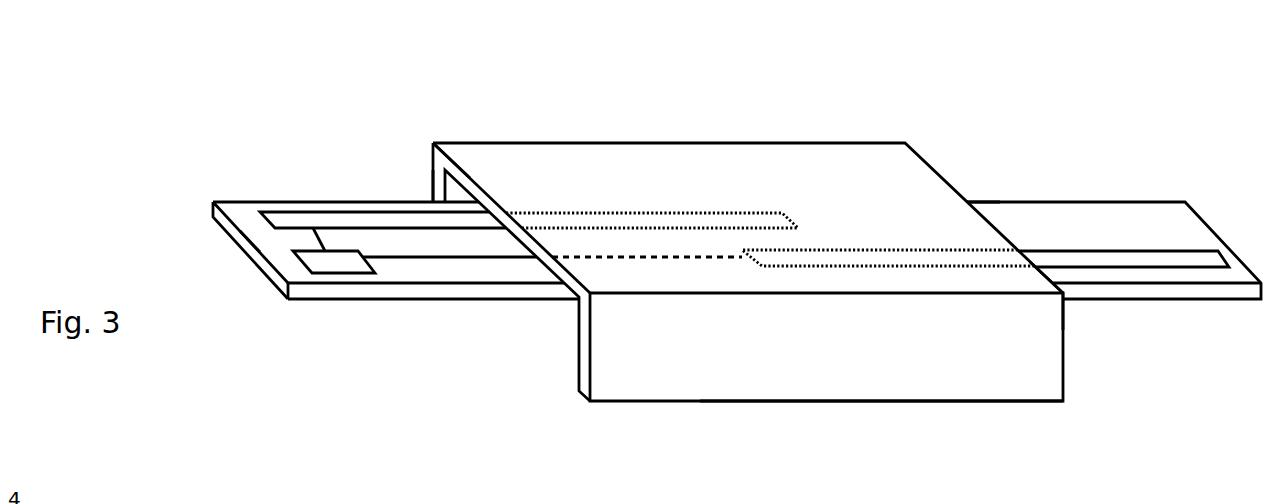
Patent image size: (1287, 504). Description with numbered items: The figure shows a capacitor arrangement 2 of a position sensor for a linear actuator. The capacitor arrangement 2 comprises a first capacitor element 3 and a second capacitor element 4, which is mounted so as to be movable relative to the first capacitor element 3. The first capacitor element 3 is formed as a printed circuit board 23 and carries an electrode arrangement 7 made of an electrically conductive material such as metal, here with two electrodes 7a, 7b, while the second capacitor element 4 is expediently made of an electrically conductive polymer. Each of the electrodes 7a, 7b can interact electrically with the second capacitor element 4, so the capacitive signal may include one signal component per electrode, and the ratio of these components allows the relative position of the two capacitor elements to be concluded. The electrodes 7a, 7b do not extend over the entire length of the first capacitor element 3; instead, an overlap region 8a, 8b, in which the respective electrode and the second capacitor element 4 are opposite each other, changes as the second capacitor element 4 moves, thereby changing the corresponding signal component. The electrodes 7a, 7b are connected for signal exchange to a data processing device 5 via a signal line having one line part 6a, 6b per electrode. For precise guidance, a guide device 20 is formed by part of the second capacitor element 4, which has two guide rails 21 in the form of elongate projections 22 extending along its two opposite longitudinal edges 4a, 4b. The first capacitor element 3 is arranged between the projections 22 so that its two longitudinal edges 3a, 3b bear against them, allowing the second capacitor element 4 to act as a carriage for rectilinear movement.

The capacitor arrangement 2 is at (278, 118).
The first capacitor element 3 is at (1097, 217).
The longitudinal edge of the first capacitor element 3a is at (213, 205).
The longitudinal edge of the first capacitor element 3b is at (368, 293).
The second capacitor element 4 is at (676, 160).
The longitudinal edge of the second capacitor element 4a is at (431, 151).
The longitudinal edge of the second capacitor element 4b is at (1050, 304).
The data processing device 5 is at (330, 252).
The line part 6a is at (312, 237).
The line part 6b is at (455, 262).
The electrode arrangement 7 is at (257, 236).
The electrode 7a is at (352, 222).
The electrode 7b is at (1204, 261).
The overlap region 8a is at (765, 218).
The overlap region 8b is at (861, 257).
The guide device 20 is at (693, 427).
The guide rail 21 is at (433, 198).
The elongate projection 22 is at (431, 183).
The printed circuit board 23 is at (1027, 217).